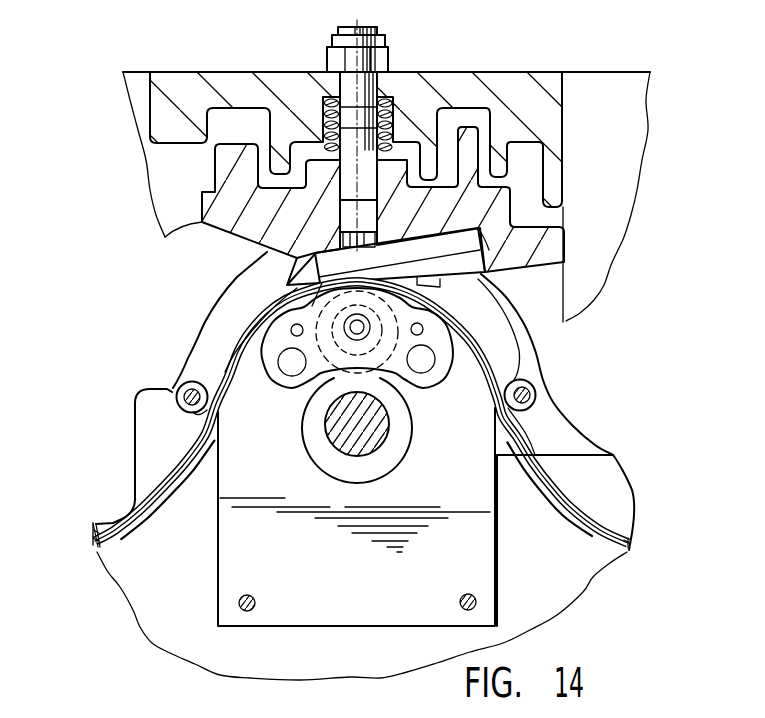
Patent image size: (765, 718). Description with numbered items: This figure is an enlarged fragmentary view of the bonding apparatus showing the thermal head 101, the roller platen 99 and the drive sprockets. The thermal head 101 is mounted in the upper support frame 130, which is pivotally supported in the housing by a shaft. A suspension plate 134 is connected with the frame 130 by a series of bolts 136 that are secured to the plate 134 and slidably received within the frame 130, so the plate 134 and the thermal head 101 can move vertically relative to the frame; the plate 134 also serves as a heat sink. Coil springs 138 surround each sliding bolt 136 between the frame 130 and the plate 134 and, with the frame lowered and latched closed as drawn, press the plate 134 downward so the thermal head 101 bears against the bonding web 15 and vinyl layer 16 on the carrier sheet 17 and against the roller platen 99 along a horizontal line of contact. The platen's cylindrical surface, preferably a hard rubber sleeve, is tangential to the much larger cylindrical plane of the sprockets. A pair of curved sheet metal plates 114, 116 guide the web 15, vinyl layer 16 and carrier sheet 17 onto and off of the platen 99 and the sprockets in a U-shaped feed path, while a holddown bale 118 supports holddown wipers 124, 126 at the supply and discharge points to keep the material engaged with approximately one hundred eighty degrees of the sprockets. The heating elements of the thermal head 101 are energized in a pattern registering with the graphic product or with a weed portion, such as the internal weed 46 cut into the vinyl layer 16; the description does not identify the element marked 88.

The upper support frame 130 is at (600, 72).
The suspension plate 134 is at (222, 152).
The bolts 136 is at (343, 87).
The coil springs 138 is at (372, 116).
The thermal head 101 is at (472, 242).
The roller platen 99 is at (388, 257).
The holddown bale 118 is at (210, 332).
The holddown wiper 126 is at (200, 433).
The holddown wiper 124 is at (517, 421).
The internal weed 46 is at (194, 467).
The bearing 88 is at (372, 412).
The curved sheet metal plate 116 is at (158, 517).
The curved sheet metal plate 114 is at (563, 513).
The bonding web 15 is at (114, 515).
The vinyl layer 16 is at (93, 526).
The carrier sheet 17 is at (608, 538).